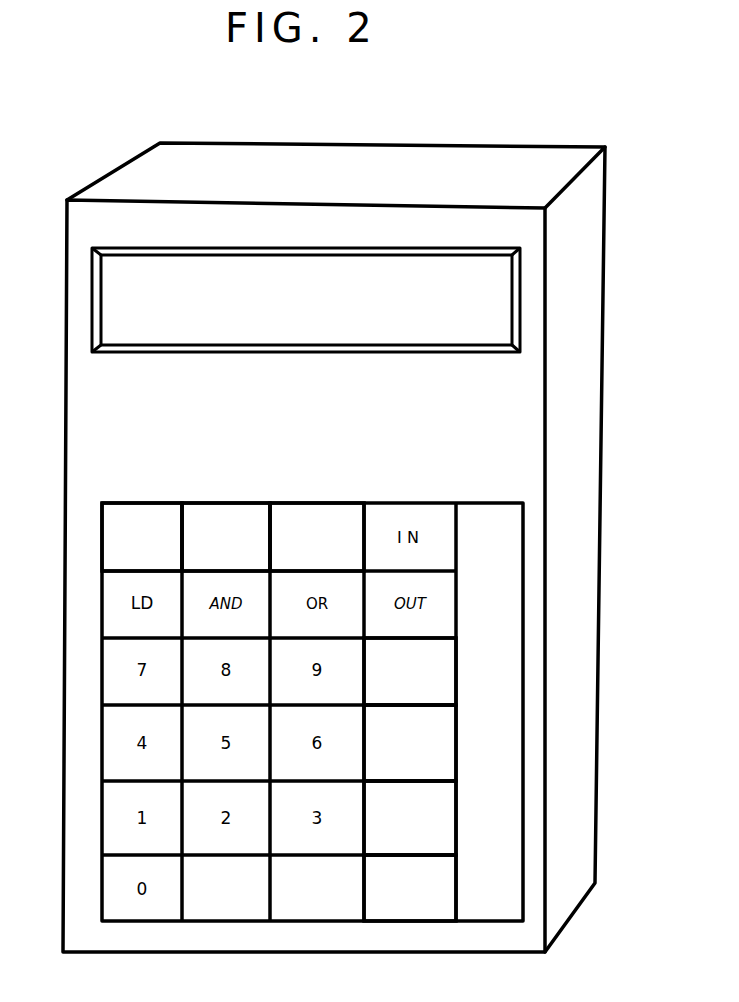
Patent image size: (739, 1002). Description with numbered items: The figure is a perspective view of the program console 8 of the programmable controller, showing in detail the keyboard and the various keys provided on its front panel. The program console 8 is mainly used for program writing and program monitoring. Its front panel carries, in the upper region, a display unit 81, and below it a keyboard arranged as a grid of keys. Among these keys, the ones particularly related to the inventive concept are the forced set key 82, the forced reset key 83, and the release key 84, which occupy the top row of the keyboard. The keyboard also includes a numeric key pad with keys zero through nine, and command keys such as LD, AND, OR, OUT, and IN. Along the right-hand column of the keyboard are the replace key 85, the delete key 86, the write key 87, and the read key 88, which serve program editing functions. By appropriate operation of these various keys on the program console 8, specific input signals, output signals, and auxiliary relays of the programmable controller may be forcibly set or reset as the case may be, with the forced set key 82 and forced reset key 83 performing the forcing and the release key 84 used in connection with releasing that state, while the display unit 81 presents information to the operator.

The program console 8 is at (600, 397).
The display unit 81 is at (503, 309).
The forced set key 82 is at (102, 540).
The forced reset key 83 is at (240, 504).
The release key 84 is at (307, 510).
The replace key 85 is at (446, 693).
The delete key 86 is at (448, 763).
The write key 87 is at (438, 836).
The read key 88 is at (390, 912).